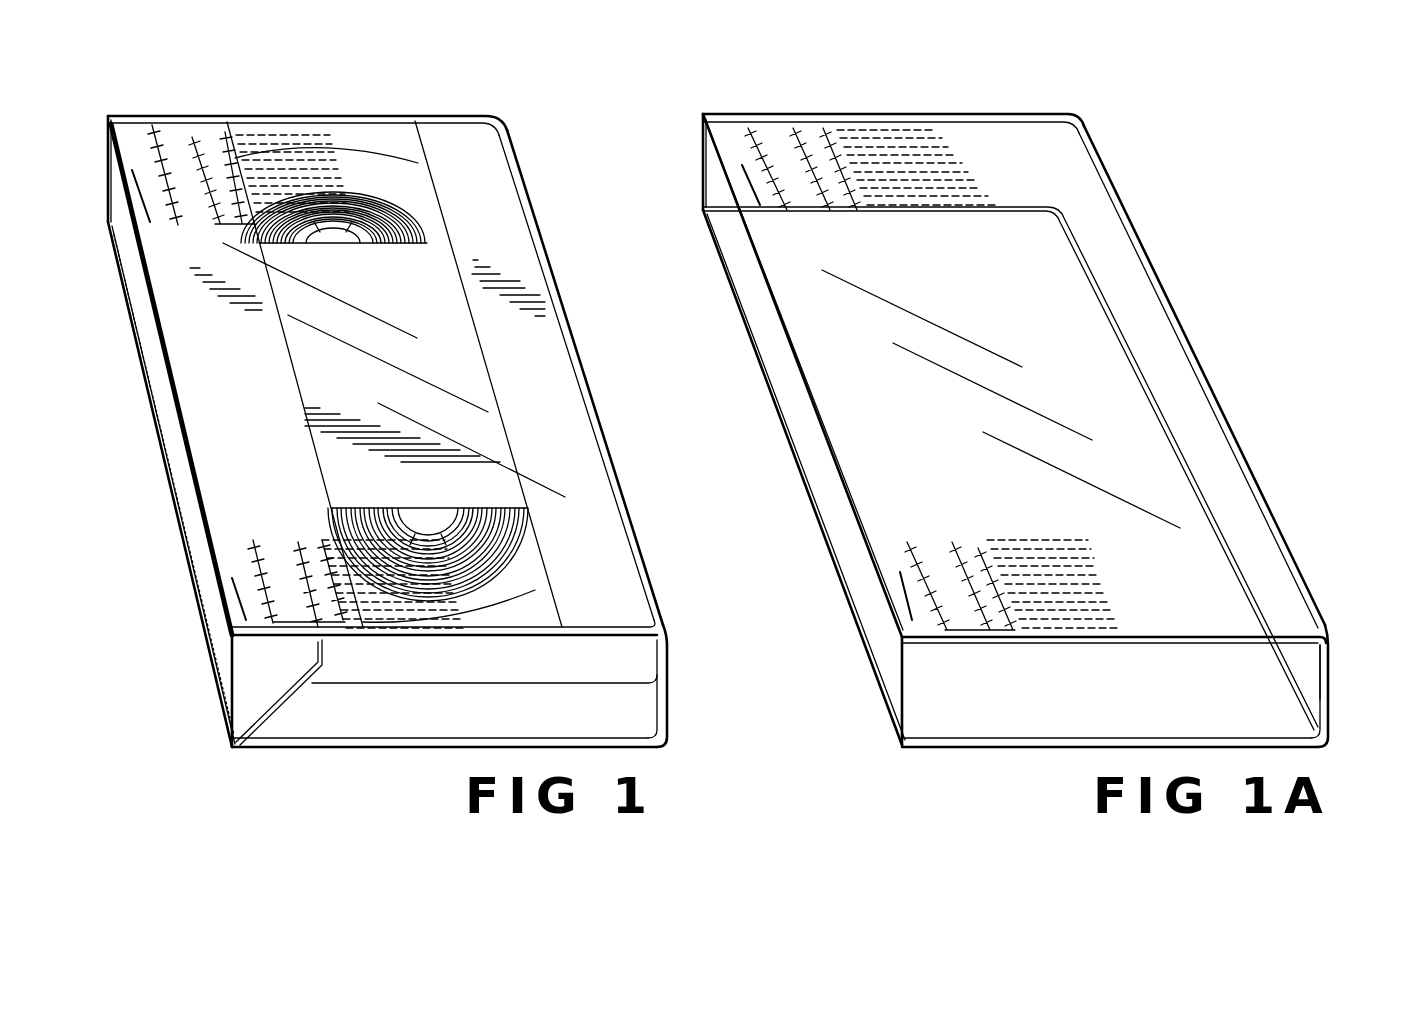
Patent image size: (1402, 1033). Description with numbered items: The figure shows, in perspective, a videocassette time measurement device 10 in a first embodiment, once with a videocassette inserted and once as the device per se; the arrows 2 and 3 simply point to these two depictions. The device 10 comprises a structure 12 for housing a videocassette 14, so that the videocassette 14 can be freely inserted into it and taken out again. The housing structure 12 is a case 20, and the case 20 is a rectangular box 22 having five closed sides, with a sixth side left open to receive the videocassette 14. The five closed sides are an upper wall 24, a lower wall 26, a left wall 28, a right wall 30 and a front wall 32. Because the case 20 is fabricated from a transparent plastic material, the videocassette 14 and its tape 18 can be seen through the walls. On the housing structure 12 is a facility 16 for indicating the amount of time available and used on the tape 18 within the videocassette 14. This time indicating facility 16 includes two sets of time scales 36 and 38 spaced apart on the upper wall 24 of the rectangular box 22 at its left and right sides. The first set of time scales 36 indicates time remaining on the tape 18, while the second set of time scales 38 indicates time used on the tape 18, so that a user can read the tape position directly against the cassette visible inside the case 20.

In FIG. 1, the video cassette storage case (first embodiment) 2 is at (590, 335).
In FIG. 1A, the video cassette storage case (second embodiment) 3 is at (1210, 324).
In FIG. 1, the videocassette time measurement device 10 is at (518, 104).
In FIG. 1A, the videocassette time measurement device 10 is at (1140, 104).
In FIG. 1, the structure for housing a videocassette 12 is at (303, 106).
In FIG. 1A, the structure for housing a videocassette 12 is at (943, 106).
In FIG. 1, the videocassette 14 is at (193, 495).
In FIG. 1, the facility for indicating time 16 is at (196, 150).
In FIG. 1A, the facility for indicating time 16 is at (802, 124).
In FIG. 1, the tape 18 is at (540, 585).
In FIG. 1, the case 20 is at (432, 106).
In FIG. 1A, the case 20 is at (1043, 106).
In FIG. 1, the rectangular box 22 is at (620, 475).
In FIG. 1A, the rectangular box 22 is at (1225, 407).
In FIG. 1, the upper wall 24 is at (515, 232).
In FIG. 1A, the upper wall 24 is at (1122, 245).
In FIG. 1, the lower wall 26 is at (362, 750).
In FIG. 1A, the lower wall 26 is at (842, 535).
In FIG. 1, the left wall 28 is at (326, 727).
In FIG. 1A, the left wall 28 is at (1038, 717).
In FIG. 1, the right wall 30 is at (108, 168).
In FIG. 1A, the right wall 30 is at (703, 178).
In FIG. 1, the front wall 32 is at (668, 690).
In FIG. 1A, the front wall 32 is at (1330, 690).
In FIG. 1, the first set of time scales 36 is at (306, 538).
In FIG. 1A, the first set of time scales 36 is at (965, 538).
In FIG. 1, the second set of time scales 38 is at (217, 224).
In FIG. 1A, the second set of time scales 38 is at (823, 208).